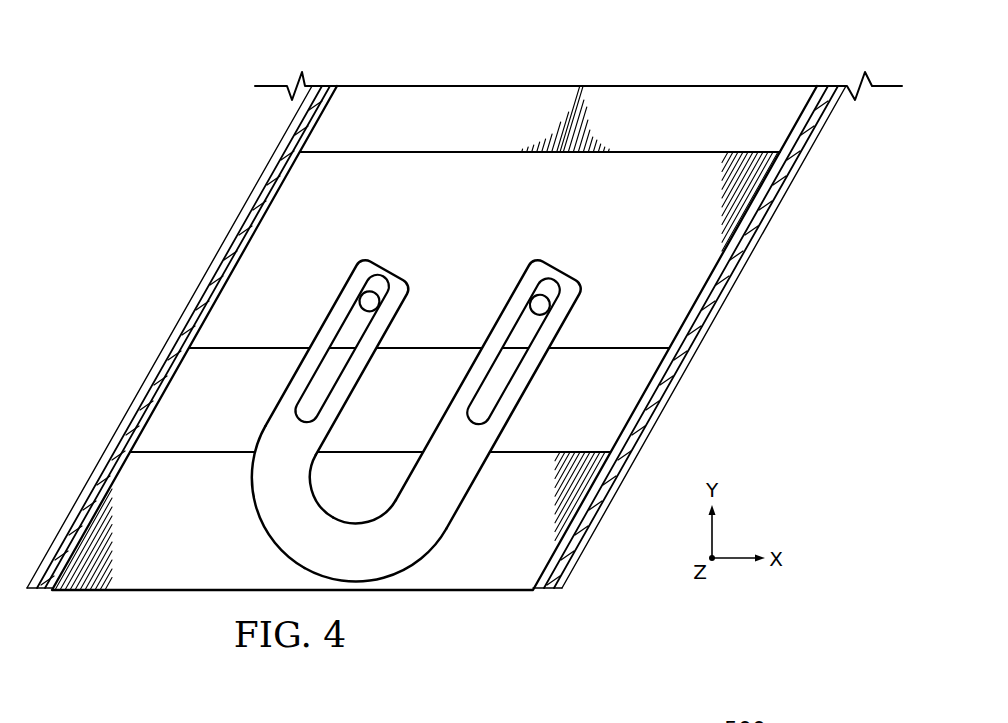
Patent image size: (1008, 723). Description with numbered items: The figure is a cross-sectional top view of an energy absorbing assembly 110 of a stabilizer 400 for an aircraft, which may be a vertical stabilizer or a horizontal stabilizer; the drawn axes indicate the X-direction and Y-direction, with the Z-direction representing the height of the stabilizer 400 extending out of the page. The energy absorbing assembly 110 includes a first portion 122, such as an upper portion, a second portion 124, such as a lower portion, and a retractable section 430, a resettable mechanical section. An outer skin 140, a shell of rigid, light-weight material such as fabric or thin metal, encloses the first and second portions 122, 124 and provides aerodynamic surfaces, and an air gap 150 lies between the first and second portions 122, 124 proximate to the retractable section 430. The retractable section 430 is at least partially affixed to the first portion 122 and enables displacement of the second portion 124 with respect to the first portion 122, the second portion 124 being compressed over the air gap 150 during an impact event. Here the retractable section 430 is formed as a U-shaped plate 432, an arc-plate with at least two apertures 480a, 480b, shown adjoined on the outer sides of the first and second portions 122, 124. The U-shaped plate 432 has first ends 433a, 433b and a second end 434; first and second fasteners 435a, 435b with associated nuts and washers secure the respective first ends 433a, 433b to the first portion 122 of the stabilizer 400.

The stabilizer 400 is at (718, 50).
The energy absorbing assembly 110 is at (806, 239).
The first portion 122 is at (447, 168).
The second portion 124 is at (500, 580).
The outer skin 140 is at (737, 280).
The air gap 150 is at (642, 386).
The retractable section 430 is at (236, 429).
The U-shaped plate 432 is at (458, 480).
The second end 434 is at (259, 478).
The first end 433a is at (336, 327).
The first end 433b is at (504, 328).
The first fastener 435a is at (364, 297).
The second fastener 435b is at (532, 297).
The aperture 480a is at (308, 391).
The aperture 480b is at (492, 404).